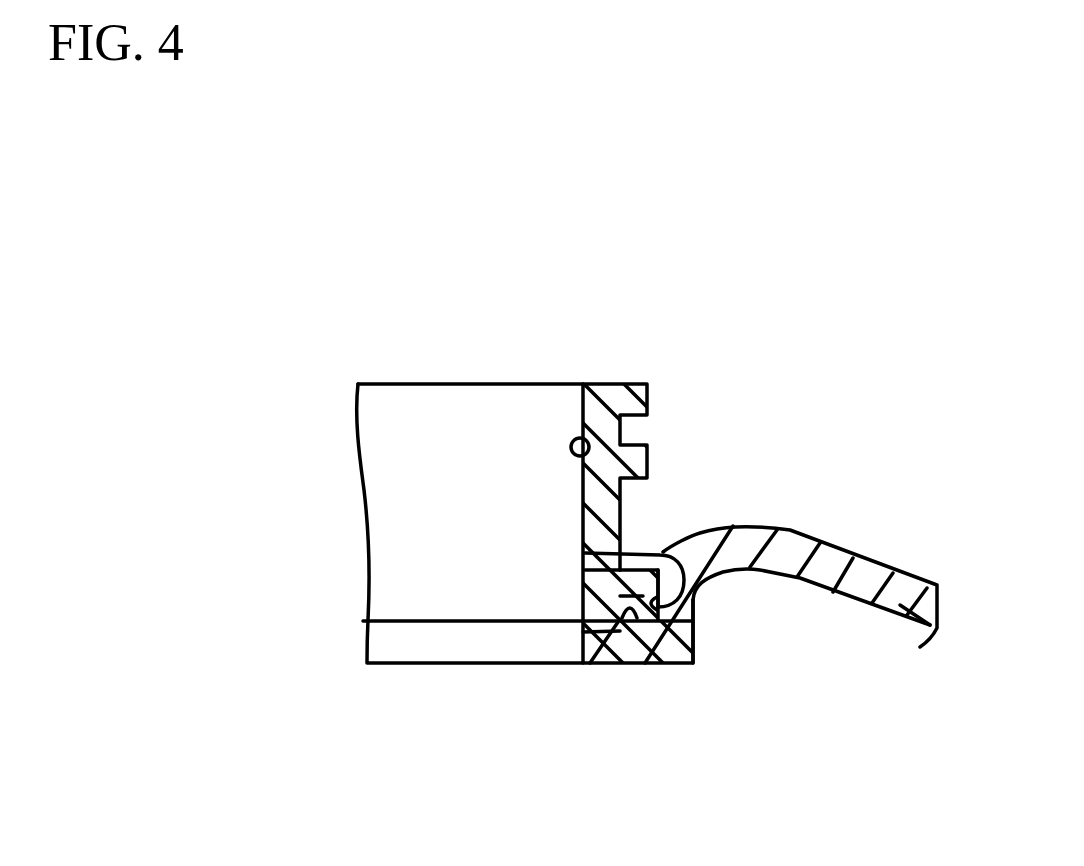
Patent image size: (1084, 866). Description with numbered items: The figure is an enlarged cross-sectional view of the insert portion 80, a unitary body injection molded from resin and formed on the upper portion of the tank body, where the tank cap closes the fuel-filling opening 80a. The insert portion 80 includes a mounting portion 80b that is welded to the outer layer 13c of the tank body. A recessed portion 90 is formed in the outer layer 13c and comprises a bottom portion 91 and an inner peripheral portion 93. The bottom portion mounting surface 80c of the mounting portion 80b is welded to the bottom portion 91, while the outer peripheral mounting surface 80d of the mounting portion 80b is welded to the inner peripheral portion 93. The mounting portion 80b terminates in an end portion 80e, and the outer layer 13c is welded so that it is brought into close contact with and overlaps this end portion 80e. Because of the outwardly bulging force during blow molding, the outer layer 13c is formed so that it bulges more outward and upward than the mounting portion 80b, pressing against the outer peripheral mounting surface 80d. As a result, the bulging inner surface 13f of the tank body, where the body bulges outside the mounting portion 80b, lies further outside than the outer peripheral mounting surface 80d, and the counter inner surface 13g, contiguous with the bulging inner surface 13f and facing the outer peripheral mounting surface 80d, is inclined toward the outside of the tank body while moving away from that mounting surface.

The insert portion 80 is at (500, 384).
The opening 80a is at (588, 454).
The mounting portion 80b is at (620, 596).
The bottom portion mounting surface 80c is at (583, 632).
The outer peripheral mounting surface 80d is at (585, 553).
The end portion 80e is at (585, 570).
The outer layer 13c is at (697, 537).
The bulging inner surface 13f is at (747, 568).
The counter inner surface 13g is at (700, 625).
The recessed portion 90 is at (743, 770).
The bottom portion 91 is at (628, 612).
The inner peripheral portion 93 is at (637, 613).